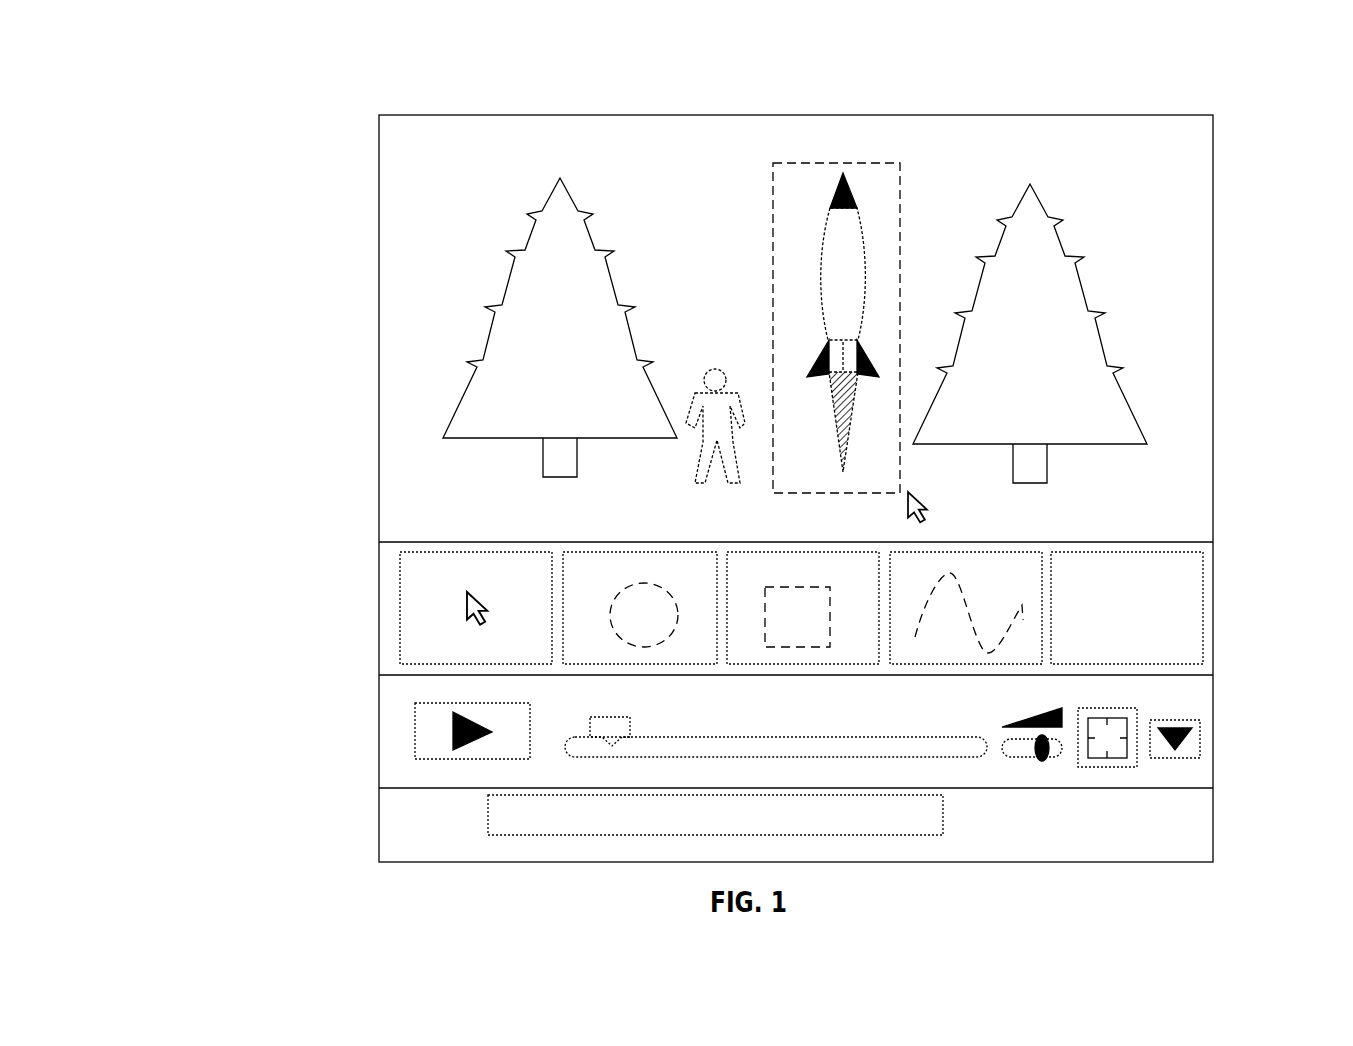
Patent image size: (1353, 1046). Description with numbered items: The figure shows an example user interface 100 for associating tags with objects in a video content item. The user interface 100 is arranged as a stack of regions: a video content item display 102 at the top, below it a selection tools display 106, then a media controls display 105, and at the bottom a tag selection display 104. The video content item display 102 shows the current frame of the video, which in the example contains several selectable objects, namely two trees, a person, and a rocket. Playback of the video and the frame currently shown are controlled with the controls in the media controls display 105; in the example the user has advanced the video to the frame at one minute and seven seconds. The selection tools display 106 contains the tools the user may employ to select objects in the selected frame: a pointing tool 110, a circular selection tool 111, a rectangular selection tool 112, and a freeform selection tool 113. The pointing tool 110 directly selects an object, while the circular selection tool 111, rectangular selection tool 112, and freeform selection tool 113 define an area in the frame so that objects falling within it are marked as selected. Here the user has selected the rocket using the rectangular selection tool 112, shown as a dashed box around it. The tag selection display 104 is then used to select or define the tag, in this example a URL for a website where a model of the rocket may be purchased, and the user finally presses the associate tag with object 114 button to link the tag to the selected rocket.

The user interface 100 is at (226, 113).
The video content item display 102 is at (1242, 117).
The tag selection display 104 is at (357, 790).
The media controls display 105 is at (357, 677).
The selection tools display 106 is at (357, 543).
The pointing tool 110 is at (543, 585).
The circular selection tool 111 is at (710, 581).
The rectangular selection tool 112 is at (875, 581).
The freeform selection tool 113 is at (1035, 583).
The associate tag with object button 114 is at (1195, 581).